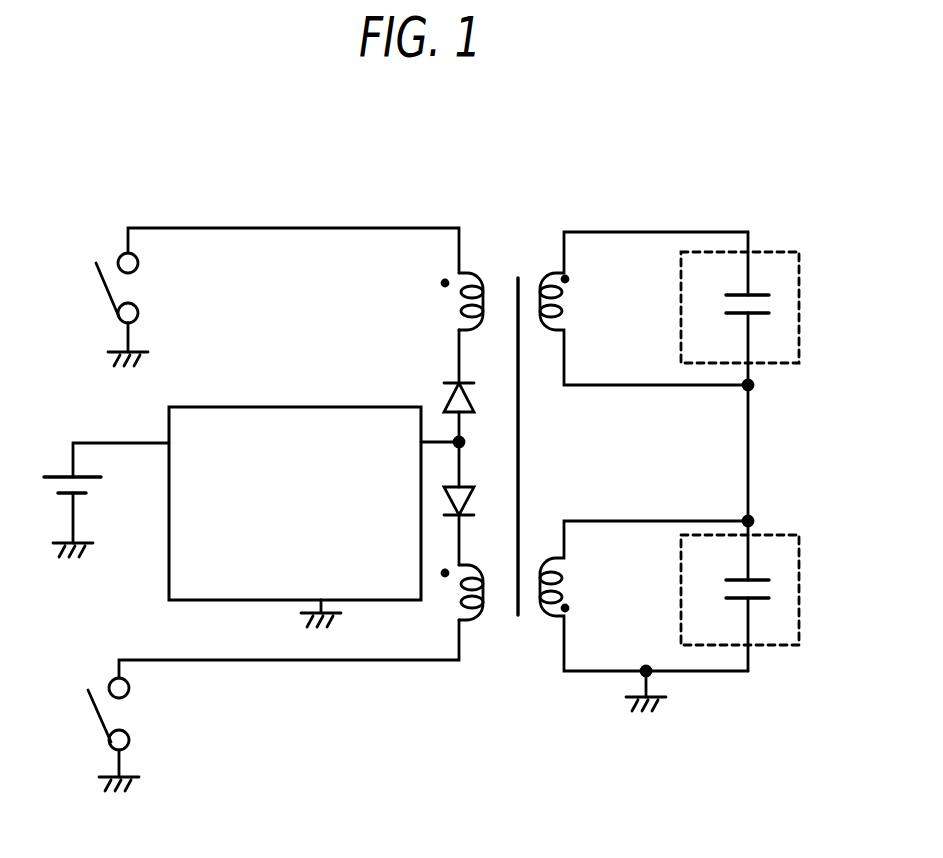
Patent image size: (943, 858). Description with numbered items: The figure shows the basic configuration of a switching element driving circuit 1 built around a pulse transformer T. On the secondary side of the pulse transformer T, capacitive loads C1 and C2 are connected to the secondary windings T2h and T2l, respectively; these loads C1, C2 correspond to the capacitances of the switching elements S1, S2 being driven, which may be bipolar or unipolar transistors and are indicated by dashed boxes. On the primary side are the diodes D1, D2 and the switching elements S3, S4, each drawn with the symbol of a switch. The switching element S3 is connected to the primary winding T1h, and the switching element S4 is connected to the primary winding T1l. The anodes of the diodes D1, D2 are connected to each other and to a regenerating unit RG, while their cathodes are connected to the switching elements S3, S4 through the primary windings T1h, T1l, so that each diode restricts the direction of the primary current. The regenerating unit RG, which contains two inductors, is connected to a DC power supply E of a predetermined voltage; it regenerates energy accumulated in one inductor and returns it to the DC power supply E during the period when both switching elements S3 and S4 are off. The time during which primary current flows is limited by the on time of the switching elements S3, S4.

The switching element driving circuit 1 is at (173, 173).
The switching element S3 is at (134, 309).
The switching element S4 is at (127, 734).
The DC power supply E is at (106, 500).
The regenerating unit RG is at (311, 407).
The diode D1 is at (446, 386).
The diode D2 is at (475, 503).
The pulse transformer T is at (500, 214).
The primary winding T1h is at (446, 286).
The primary winding T1l is at (447, 603).
The secondary winding T2h is at (644, 308).
The secondary winding T2l is at (644, 616).
The capacitive load C1 is at (731, 311).
The capacitive load C2 is at (730, 528).
The switching element S1 is at (749, 292).
The switching element S2 is at (751, 574).